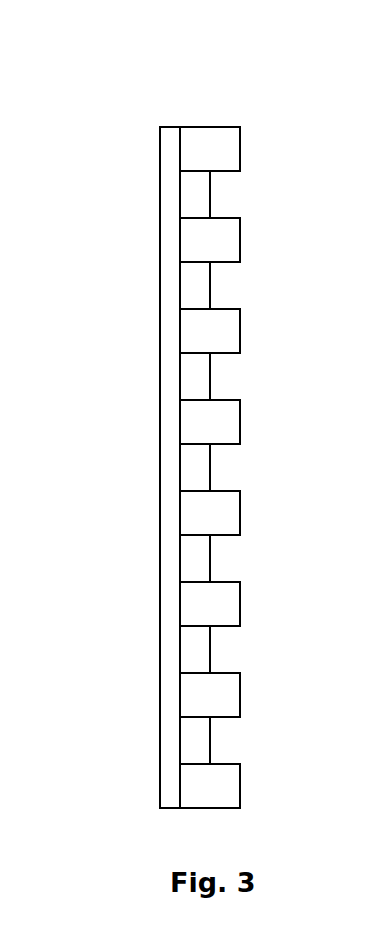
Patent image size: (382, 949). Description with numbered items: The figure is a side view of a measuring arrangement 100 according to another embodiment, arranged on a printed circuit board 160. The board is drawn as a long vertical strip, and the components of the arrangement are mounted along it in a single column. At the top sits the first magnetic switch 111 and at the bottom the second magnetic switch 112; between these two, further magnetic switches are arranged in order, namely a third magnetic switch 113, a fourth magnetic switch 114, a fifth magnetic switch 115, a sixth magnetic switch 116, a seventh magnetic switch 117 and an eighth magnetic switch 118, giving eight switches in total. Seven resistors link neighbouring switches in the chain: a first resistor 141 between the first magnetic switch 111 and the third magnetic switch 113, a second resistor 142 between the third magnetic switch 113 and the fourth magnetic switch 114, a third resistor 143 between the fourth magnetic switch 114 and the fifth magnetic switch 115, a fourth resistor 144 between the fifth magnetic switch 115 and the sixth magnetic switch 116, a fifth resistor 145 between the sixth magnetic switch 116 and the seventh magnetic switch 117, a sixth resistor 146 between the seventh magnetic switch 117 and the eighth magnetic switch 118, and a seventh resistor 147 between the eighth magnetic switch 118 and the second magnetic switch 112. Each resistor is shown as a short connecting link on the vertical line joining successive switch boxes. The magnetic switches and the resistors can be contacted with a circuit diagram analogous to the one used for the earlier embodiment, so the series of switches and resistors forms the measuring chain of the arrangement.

The measuring arrangement 100 is at (131, 64).
The printed circuit board 160 is at (160, 180).
The first magnetic switch 111 is at (231, 160).
The third magnetic switch 113 is at (231, 251).
The fourth magnetic switch 114 is at (231, 342).
The fifth magnetic switch 115 is at (231, 433).
The sixth magnetic switch 116 is at (231, 524).
The seventh magnetic switch 117 is at (231, 615).
The eighth magnetic switch 118 is at (231, 706).
The second magnetic switch 112 is at (231, 797).
The first resistor 141 is at (198, 200).
The second resistor 142 is at (198, 291).
The third resistor 143 is at (198, 382).
The fourth resistor 144 is at (198, 472).
The fifth resistor 145 is at (198, 563).
The sixth resistor 146 is at (198, 653).
The seventh resistor 147 is at (198, 743).